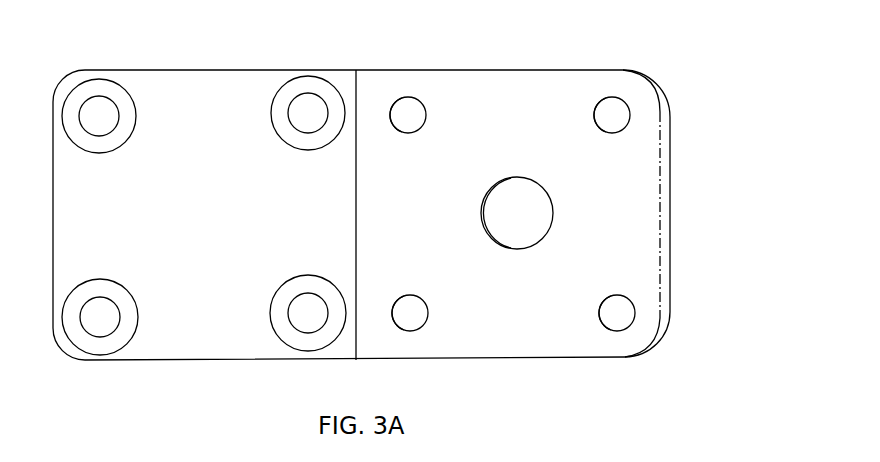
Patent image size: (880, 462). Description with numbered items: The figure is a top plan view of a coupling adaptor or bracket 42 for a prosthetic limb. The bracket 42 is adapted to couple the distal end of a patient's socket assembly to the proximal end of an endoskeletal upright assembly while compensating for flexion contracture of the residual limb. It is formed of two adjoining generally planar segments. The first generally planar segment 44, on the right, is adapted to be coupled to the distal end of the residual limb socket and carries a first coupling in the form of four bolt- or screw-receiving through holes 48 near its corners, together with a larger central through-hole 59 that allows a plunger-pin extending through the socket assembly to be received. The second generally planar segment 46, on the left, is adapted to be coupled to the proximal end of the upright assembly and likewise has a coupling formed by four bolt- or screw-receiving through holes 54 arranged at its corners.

The coupling adaptor or bracket 42 is at (713, 158).
The first generally planar segment 44 is at (499, 70).
The second generally planar segment 46 is at (201, 70).
The bolt- or screw-receiving through holes 48 is at (426, 112).
The bolt- or screw-receiving through holes 54 is at (95, 136).
The through-hole 59 is at (517, 178).